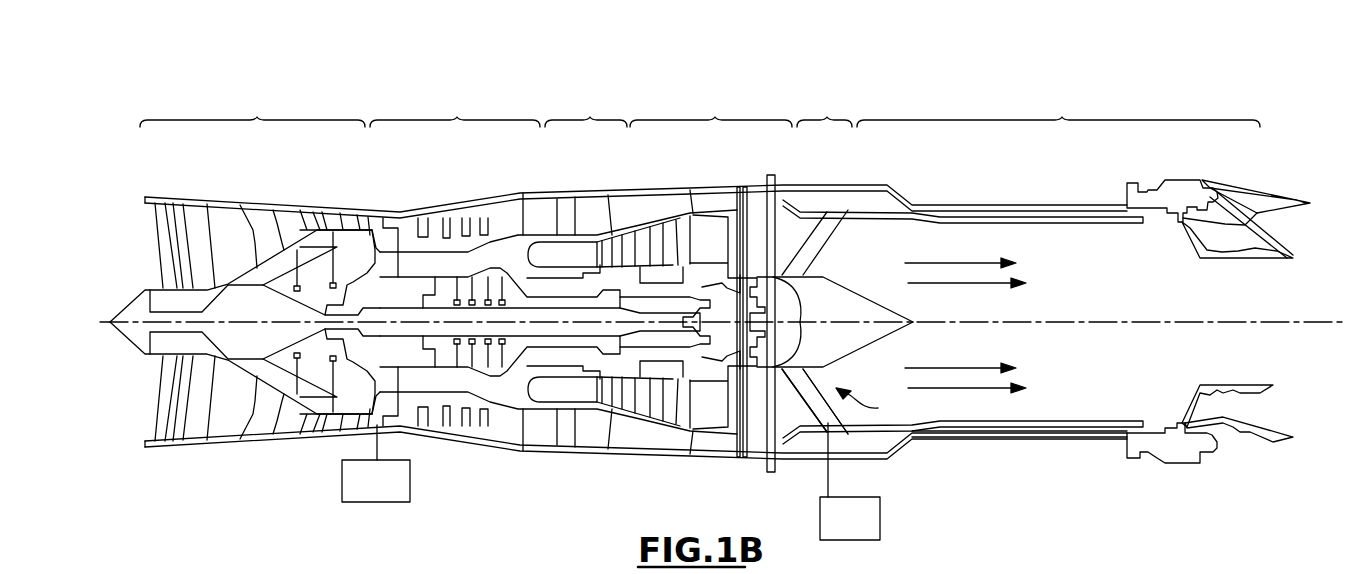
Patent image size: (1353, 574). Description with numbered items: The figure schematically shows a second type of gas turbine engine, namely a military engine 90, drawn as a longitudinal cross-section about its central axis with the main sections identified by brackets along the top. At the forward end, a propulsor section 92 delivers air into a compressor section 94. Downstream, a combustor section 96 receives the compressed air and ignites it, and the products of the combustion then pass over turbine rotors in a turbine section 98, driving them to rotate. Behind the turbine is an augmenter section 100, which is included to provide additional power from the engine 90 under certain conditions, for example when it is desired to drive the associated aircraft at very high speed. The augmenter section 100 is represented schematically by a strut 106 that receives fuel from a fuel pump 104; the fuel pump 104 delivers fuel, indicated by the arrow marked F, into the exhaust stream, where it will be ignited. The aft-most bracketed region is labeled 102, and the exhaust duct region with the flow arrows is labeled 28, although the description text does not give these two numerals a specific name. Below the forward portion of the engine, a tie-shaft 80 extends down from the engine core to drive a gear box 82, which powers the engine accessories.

The nacelle exhaust duct 28 is at (972, 398).
The tie-shaft 80 is at (377, 442).
The gear box 82 is at (400, 478).
The military engine 90 is at (893, 76).
The propulsor section 92 is at (258, 118).
The compressor section 94 is at (458, 118).
The combustor section 96 is at (590, 118).
The turbine section 98 is at (715, 118).
The augmenter section 100 is at (827, 118).
The exhaust nozzle section 102 is at (1062, 118).
The fuel pump 104 is at (880, 510).
The strut 106 is at (807, 388).